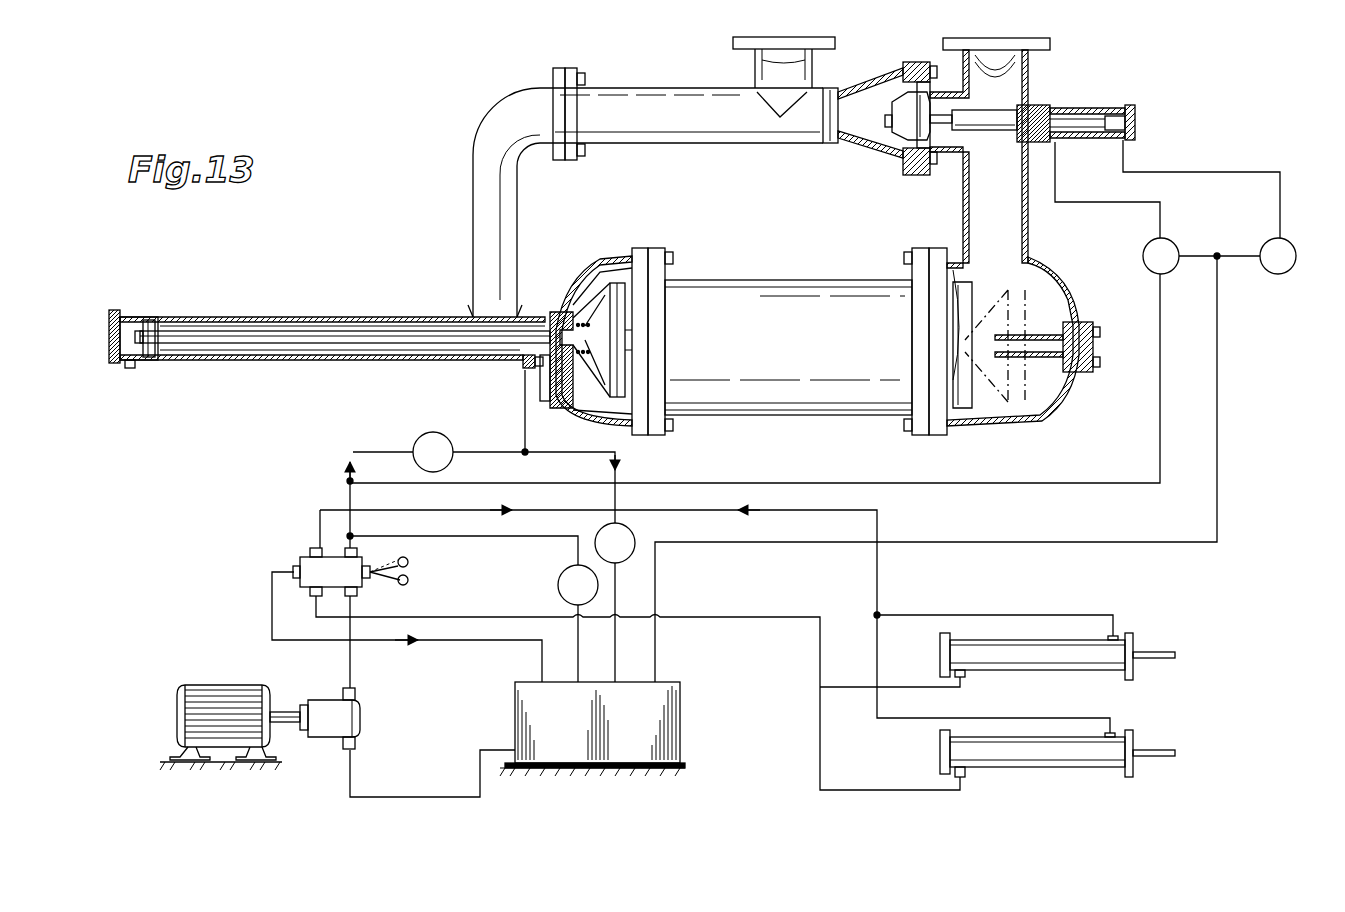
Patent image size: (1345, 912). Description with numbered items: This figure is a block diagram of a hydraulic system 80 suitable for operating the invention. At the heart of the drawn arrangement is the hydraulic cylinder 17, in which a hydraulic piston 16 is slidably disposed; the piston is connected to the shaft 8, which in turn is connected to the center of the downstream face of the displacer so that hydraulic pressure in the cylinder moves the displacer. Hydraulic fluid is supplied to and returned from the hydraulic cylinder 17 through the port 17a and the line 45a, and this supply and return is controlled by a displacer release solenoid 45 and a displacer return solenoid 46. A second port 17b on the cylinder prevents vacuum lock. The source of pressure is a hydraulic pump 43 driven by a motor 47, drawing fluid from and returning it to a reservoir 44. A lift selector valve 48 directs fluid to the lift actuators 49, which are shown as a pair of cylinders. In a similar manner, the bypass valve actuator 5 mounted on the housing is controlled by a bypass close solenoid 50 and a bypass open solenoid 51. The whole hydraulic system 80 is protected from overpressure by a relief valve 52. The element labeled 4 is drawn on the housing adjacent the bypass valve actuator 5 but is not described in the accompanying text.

The diffuser cone 4 is at (873, 117).
The bypass valve actuator 5 is at (1102, 110).
The shaft 8 is at (263, 338).
The hydraulic piston 16 is at (148, 315).
The hydraulic cylinder 17 is at (215, 318).
The port 17a is at (515, 367).
The port 17b is at (130, 368).
The hydraulic pump 43 is at (325, 725).
The reservoir 44 is at (573, 745).
The displacer release solenoid 45 is at (627, 538).
The line 45a is at (525, 405).
The displacer return solenoid 46 is at (417, 445).
The motor 47 is at (200, 690).
The lift selector valve 48 is at (305, 558).
The lift actuators 49 is at (1120, 733).
The bypass close solenoid 50 is at (1150, 258).
The bypass open solenoid 51 is at (1290, 270).
The relief valve 52 is at (570, 588).
The hydraulic system 80 is at (1200, 746).